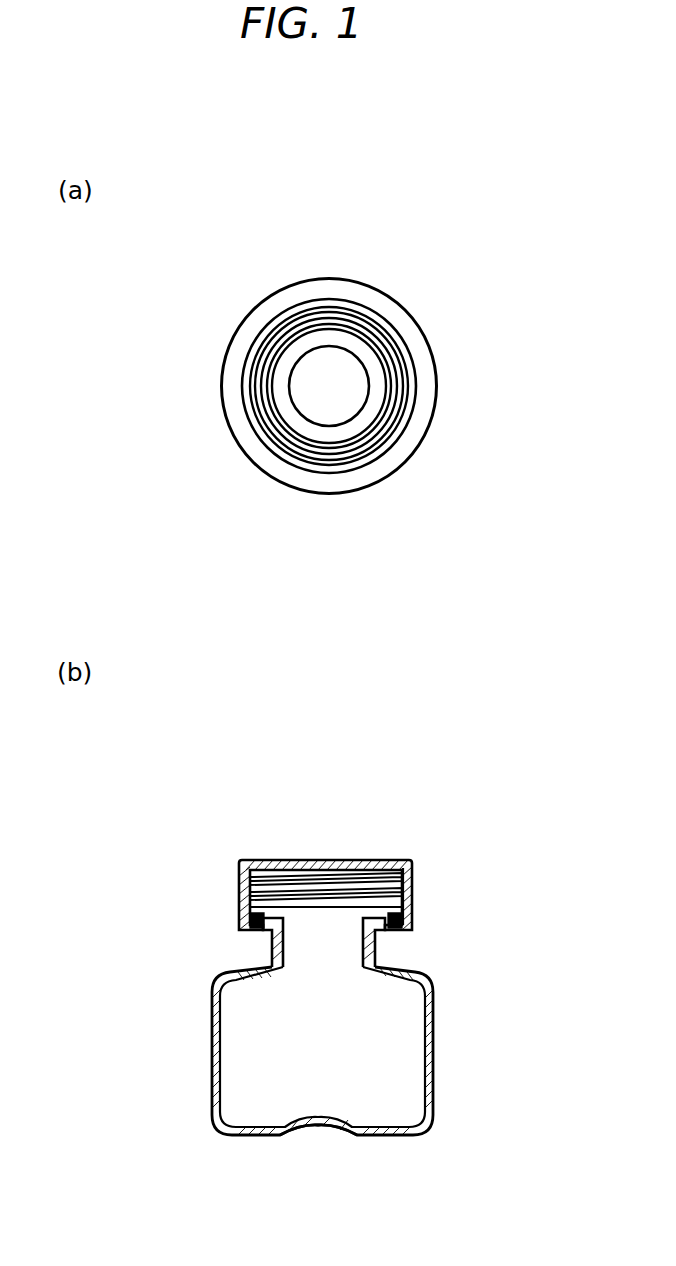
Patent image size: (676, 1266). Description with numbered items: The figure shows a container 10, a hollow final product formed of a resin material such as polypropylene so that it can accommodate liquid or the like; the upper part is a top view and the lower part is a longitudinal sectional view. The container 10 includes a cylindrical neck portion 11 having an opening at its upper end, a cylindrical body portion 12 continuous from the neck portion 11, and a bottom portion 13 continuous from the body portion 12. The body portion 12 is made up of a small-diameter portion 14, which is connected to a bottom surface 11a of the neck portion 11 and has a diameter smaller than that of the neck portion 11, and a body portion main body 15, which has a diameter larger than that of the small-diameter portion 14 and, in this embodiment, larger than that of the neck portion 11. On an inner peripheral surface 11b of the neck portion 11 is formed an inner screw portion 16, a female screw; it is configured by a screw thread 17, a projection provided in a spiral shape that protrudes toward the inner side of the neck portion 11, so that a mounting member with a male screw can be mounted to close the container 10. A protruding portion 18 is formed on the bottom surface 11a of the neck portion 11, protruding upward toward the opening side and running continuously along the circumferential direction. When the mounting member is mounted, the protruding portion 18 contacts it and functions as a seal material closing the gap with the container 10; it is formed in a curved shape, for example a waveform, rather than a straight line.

The container 10 is at (475, 275).
The neck portion 11 is at (413, 372).
The body portion 12 is at (133, 957).
The bottom portion 13 is at (272, 1133).
The small-diameter portion 14 is at (268, 950).
The body portion main body 15 is at (407, 443).
The inner screw portion 16 is at (357, 873).
The screw thread 17 is at (268, 878).
The bottom surface of the neck portion 11a is at (282, 925).
The inner peripheral surface of the neck portion 11b is at (405, 866).
The protruding portion 18 is at (245, 922).